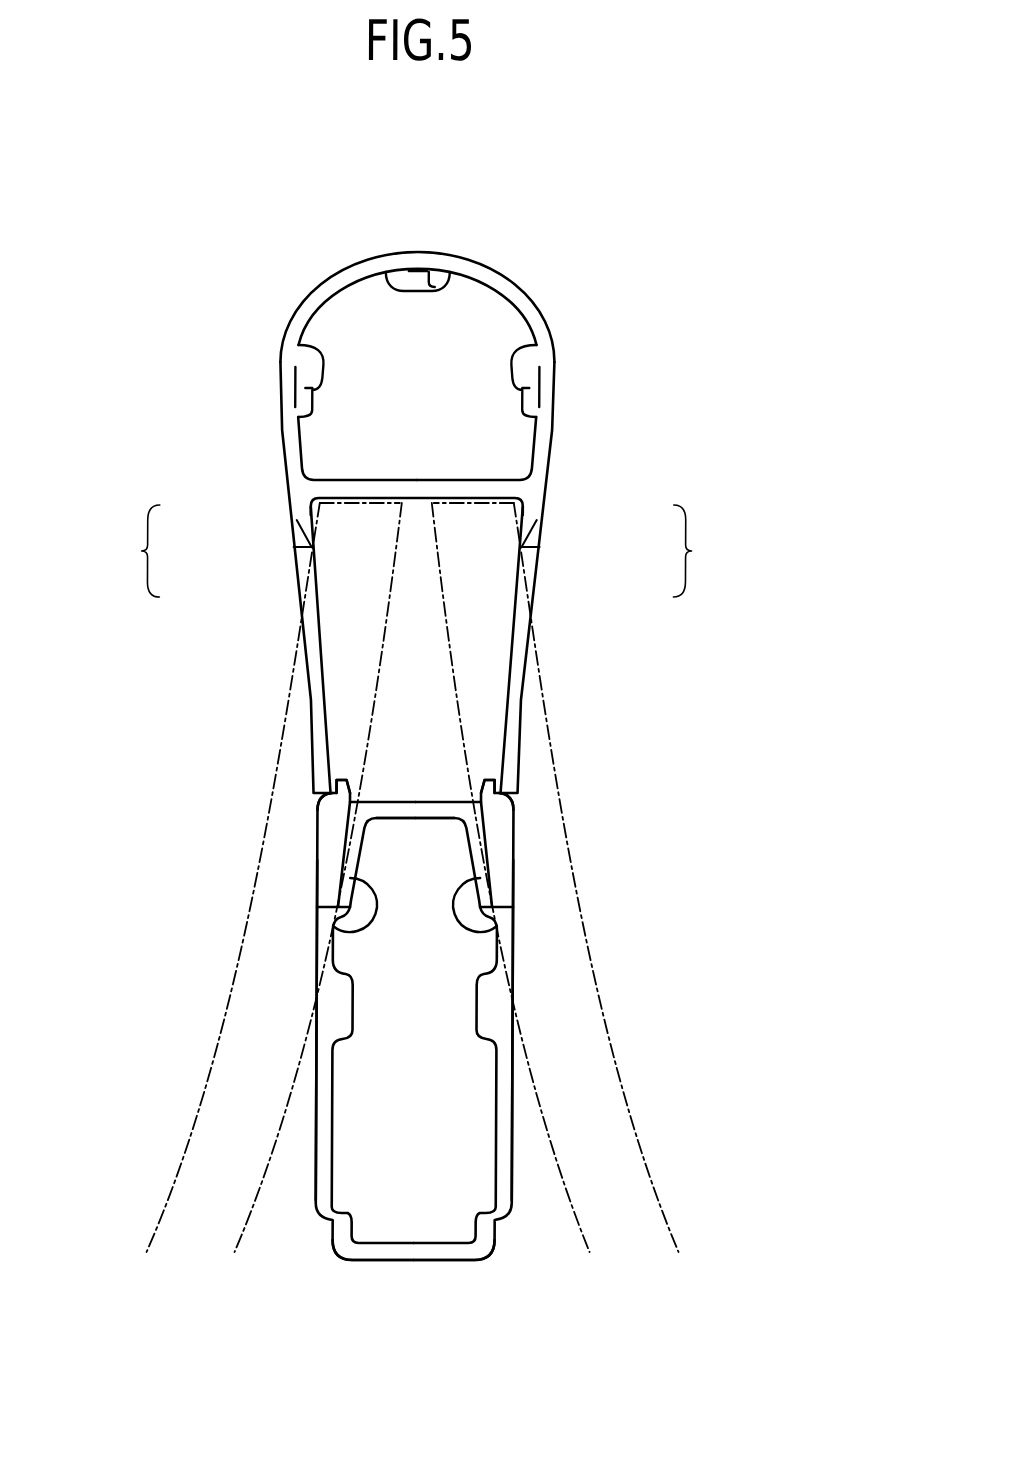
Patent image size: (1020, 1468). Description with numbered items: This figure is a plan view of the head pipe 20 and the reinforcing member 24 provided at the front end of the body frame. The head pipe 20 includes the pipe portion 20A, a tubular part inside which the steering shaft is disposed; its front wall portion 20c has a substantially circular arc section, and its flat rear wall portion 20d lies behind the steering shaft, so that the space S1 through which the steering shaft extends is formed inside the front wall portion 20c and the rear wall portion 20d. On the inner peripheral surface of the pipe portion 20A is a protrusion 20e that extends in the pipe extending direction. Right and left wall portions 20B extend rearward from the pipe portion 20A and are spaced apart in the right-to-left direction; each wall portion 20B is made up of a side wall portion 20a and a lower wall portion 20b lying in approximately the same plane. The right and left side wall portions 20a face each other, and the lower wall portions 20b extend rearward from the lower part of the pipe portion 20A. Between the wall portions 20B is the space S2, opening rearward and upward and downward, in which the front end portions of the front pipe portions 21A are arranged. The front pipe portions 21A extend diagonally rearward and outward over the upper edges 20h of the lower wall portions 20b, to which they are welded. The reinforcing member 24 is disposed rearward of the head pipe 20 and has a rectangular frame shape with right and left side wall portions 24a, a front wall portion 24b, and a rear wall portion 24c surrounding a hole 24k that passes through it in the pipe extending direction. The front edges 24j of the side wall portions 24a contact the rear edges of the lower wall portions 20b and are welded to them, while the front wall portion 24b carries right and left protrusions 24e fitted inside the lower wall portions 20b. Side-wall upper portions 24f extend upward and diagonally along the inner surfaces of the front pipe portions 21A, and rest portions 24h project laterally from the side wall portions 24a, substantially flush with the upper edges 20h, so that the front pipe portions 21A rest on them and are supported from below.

The head pipe 20 is at (545, 275).
The pipe portion 20A is at (438, 236).
The wall portions 20B is at (416, 551).
The side wall portion 20a is at (302, 528).
The lower wall portion 20b is at (280, 578).
The front wall portion 20c is at (485, 274).
The rear wall portion 20d is at (421, 490).
The protrusion 20e is at (384, 273).
The upper edges of the lower wall portions 20h is at (315, 645).
The front pipe portions 21A is at (286, 712).
The reinforcing member 24 is at (525, 1105).
The side wall portions 24a is at (327, 1113).
The front wall portion 24b is at (422, 810).
The rear wall portion 24c is at (418, 1253).
The protrusions 24e is at (334, 767).
The side-wall upper portions 24f is at (344, 937).
The rest portions 24h is at (337, 860).
The front edges of the side wall portions 24j is at (321, 817).
The hole 24k is at (442, 1130).
The space S1 is at (440, 398).
The space S2 is at (439, 668).